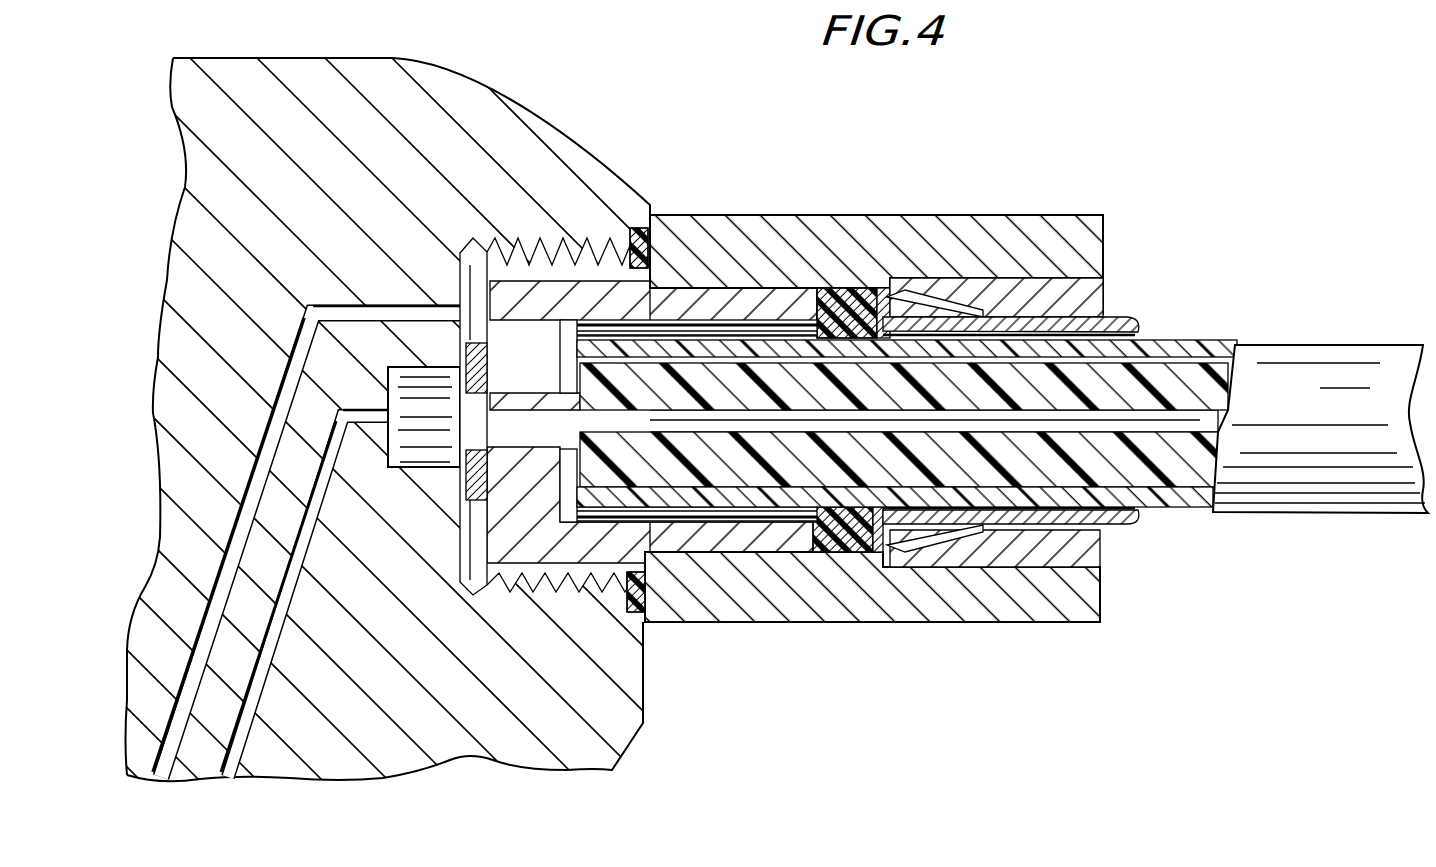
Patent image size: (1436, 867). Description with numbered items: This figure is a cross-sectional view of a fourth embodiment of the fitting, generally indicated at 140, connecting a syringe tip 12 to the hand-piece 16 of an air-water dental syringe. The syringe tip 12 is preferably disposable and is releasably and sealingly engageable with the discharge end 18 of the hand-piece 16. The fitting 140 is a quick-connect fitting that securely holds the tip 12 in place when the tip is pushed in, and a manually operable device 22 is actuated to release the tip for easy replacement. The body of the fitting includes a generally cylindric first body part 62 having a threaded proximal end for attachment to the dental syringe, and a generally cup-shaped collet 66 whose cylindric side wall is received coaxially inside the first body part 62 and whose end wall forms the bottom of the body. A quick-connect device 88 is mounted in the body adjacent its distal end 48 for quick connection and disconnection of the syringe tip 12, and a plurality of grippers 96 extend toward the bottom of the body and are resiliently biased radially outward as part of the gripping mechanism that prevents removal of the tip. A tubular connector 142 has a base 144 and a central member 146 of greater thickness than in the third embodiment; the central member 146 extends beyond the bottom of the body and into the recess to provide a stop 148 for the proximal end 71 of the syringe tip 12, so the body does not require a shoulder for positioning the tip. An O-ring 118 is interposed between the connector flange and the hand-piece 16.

The syringe tip 12 is at (1310, 380).
The hand-piece 16 is at (555, 180).
The discharge end 18 is at (612, 770).
The manually operable device 22 is at (1140, 520).
The distal end 48 is at (1090, 585).
The first body part 62 is at (903, 230).
The collet 66 is at (745, 300).
The proximal end of the syringe tip 71 is at (702, 550).
The quick-connect device 88 is at (1103, 290).
The grippers 96 is at (937, 297).
The O-ring 118 is at (480, 253).
The fitting 140 is at (1113, 178).
The tubular connector 142 is at (805, 555).
The base 144 is at (537, 390).
The central member 146 is at (570, 290).
The stop 148 is at (595, 400).